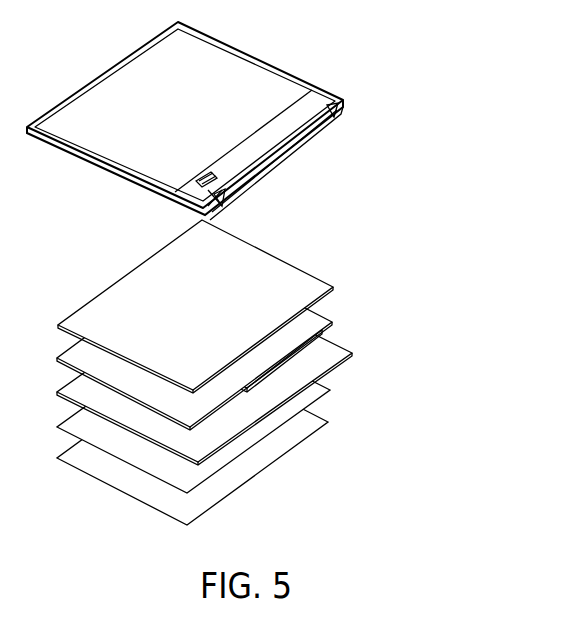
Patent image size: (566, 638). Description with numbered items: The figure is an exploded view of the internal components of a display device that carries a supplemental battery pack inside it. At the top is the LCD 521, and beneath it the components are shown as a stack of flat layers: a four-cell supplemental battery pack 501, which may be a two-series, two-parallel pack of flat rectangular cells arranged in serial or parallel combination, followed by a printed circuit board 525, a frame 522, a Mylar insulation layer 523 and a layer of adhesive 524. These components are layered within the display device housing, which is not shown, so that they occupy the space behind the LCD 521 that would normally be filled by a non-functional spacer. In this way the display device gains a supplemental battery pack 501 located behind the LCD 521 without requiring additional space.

The LCD 521 is at (287, 266).
The supplemental battery pack 501 is at (318, 308).
The printed circuit board 525 is at (318, 333).
The frame 522 is at (353, 353).
The Mylar insulation layer 523 is at (326, 385).
The adhesive 524 is at (328, 420).